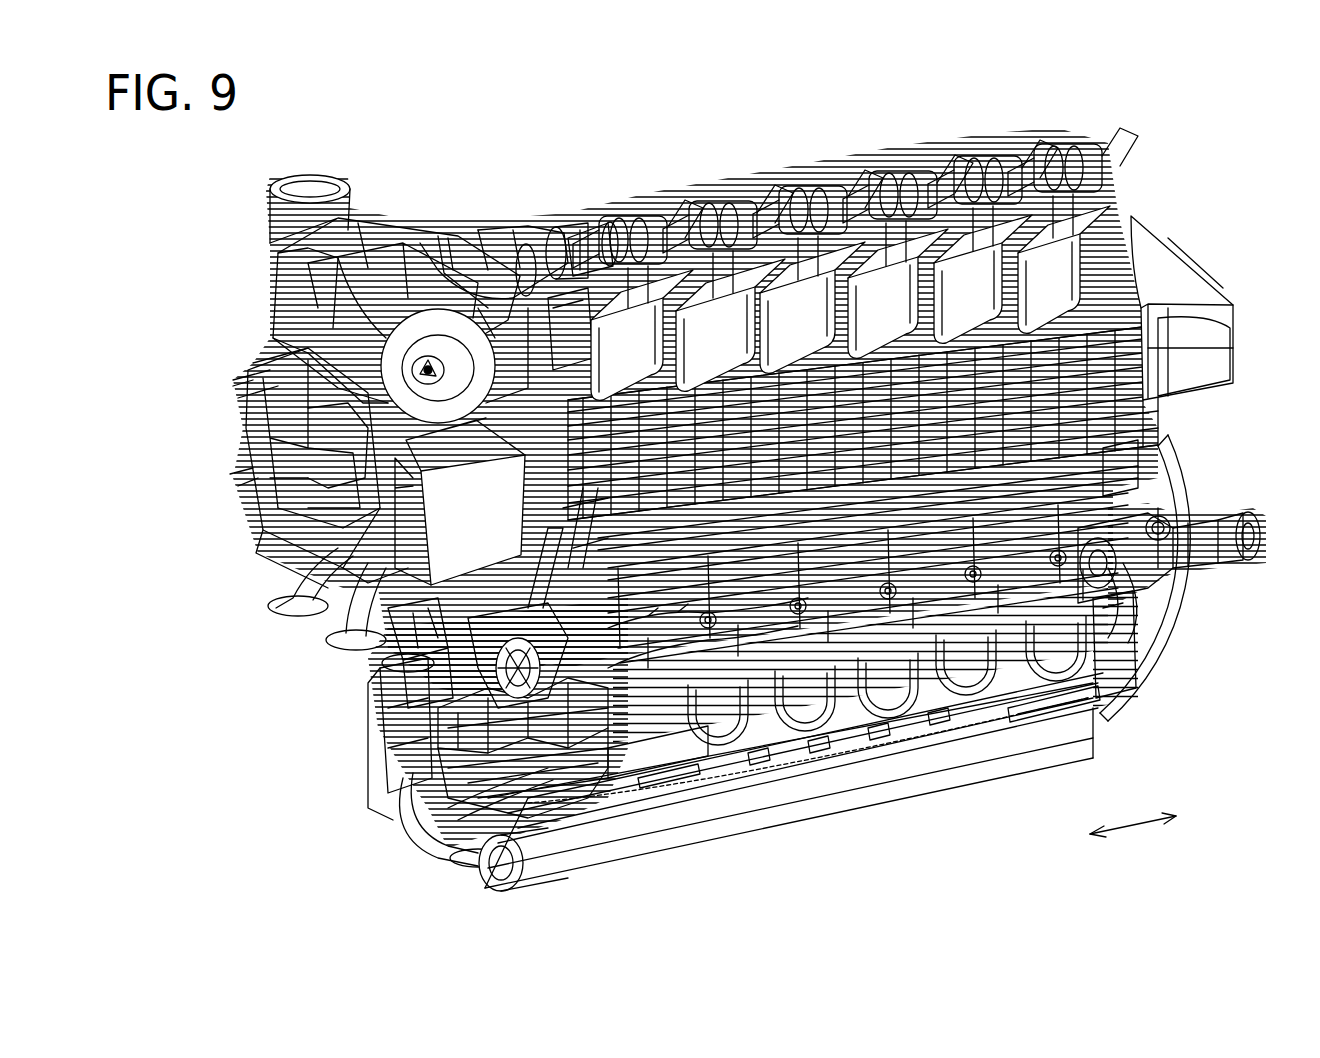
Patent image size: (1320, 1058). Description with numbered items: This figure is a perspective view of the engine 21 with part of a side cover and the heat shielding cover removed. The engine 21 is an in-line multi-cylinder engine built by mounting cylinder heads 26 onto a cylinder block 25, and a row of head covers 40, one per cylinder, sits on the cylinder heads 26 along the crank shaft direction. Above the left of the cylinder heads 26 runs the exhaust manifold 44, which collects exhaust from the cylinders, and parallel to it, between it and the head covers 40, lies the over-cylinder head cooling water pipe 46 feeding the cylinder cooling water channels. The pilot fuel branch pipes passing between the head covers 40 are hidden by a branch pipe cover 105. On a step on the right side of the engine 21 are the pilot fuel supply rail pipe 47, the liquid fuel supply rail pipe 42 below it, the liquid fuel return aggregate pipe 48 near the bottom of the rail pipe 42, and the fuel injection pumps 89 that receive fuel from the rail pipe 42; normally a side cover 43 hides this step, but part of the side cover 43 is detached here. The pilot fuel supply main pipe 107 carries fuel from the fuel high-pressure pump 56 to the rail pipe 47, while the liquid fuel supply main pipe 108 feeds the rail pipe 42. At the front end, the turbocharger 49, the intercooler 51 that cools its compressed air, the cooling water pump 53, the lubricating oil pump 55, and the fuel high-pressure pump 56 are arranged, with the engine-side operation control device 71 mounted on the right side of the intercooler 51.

The engine 21 is at (243, 776).
The cylinder block 25 is at (1107, 620).
The cylinder heads 26 is at (538, 236).
The head covers 40 is at (1040, 236).
The liquid fuel supply rail pipe 42 is at (852, 562).
The side cover 43 is at (1228, 356).
The exhaust manifold 44 is at (500, 215).
The over-cylinder head cooling water pipe 46 is at (668, 200).
The pilot fuel supply rail pipe 47 is at (938, 548).
The liquid fuel return aggregate pipe 48 is at (760, 560).
The turbocharger 49 is at (268, 305).
The intercooler 51 is at (270, 493).
The cooling water pump 53 is at (368, 688).
The lubricating oil pump 55 is at (370, 703).
The fuel high-pressure pump 56 is at (395, 795).
The engine-side operation control device 71 is at (392, 565).
The fuel injection pumps 89 is at (1145, 297).
The branch pipe cover 105 is at (945, 152).
The pilot fuel supply main pipe 107 is at (703, 607).
The liquid fuel supply main pipe 108 is at (673, 607).